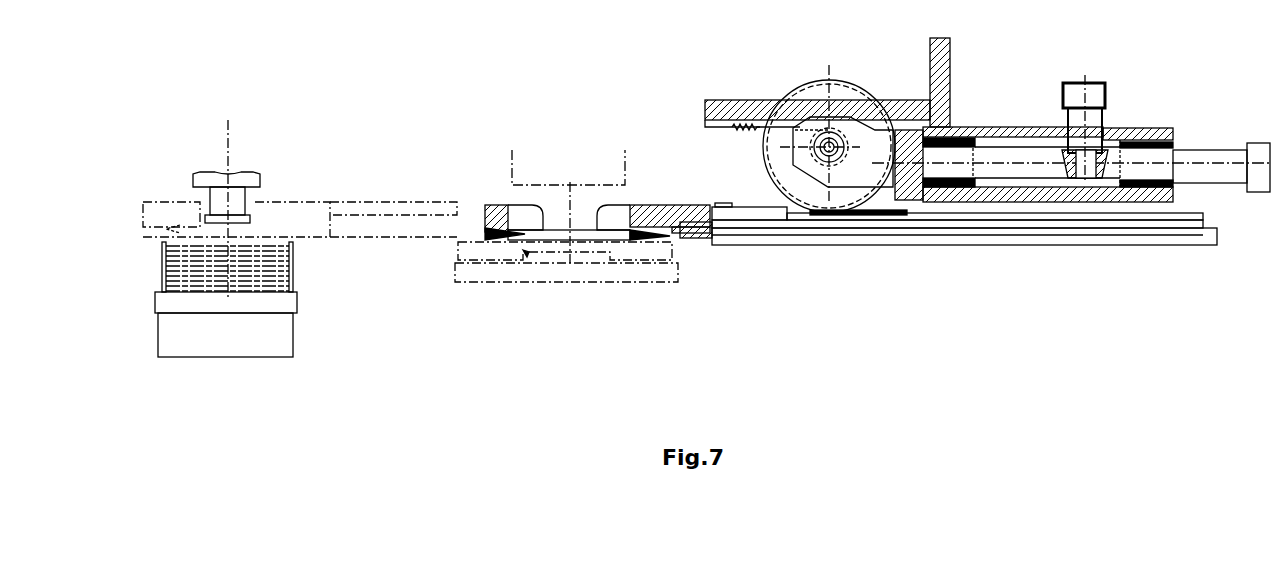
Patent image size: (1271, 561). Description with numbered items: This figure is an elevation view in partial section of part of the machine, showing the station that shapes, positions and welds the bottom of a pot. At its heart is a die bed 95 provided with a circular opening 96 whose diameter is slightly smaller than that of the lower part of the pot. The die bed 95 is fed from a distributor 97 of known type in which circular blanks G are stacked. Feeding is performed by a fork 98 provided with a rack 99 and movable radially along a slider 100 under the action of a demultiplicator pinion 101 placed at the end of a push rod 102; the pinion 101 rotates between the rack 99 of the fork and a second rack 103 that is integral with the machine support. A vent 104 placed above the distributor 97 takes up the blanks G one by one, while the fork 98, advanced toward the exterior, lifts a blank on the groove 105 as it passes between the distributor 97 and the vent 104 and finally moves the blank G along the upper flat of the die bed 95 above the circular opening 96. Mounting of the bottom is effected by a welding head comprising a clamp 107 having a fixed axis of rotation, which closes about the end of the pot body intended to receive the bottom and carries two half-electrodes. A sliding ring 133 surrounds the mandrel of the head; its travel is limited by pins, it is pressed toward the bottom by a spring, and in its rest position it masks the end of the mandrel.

The distributor 97 is at (268, 343).
The circular blanks G is at (240, 265).
The vent 104 is at (210, 218).
The sliding ring 133 is at (557, 162).
The fork 98 is at (650, 215).
The circular opening 96 is at (533, 258).
The groove 105 is at (525, 228).
The die bed 95 is at (637, 252).
The clamp 107 is at (658, 273).
The rack 103 is at (743, 123).
The demultiplicator pinion 101 is at (818, 93).
The push rod 102 is at (1205, 160).
The rack 99 is at (1006, 213).
The slider 100 is at (1168, 232).